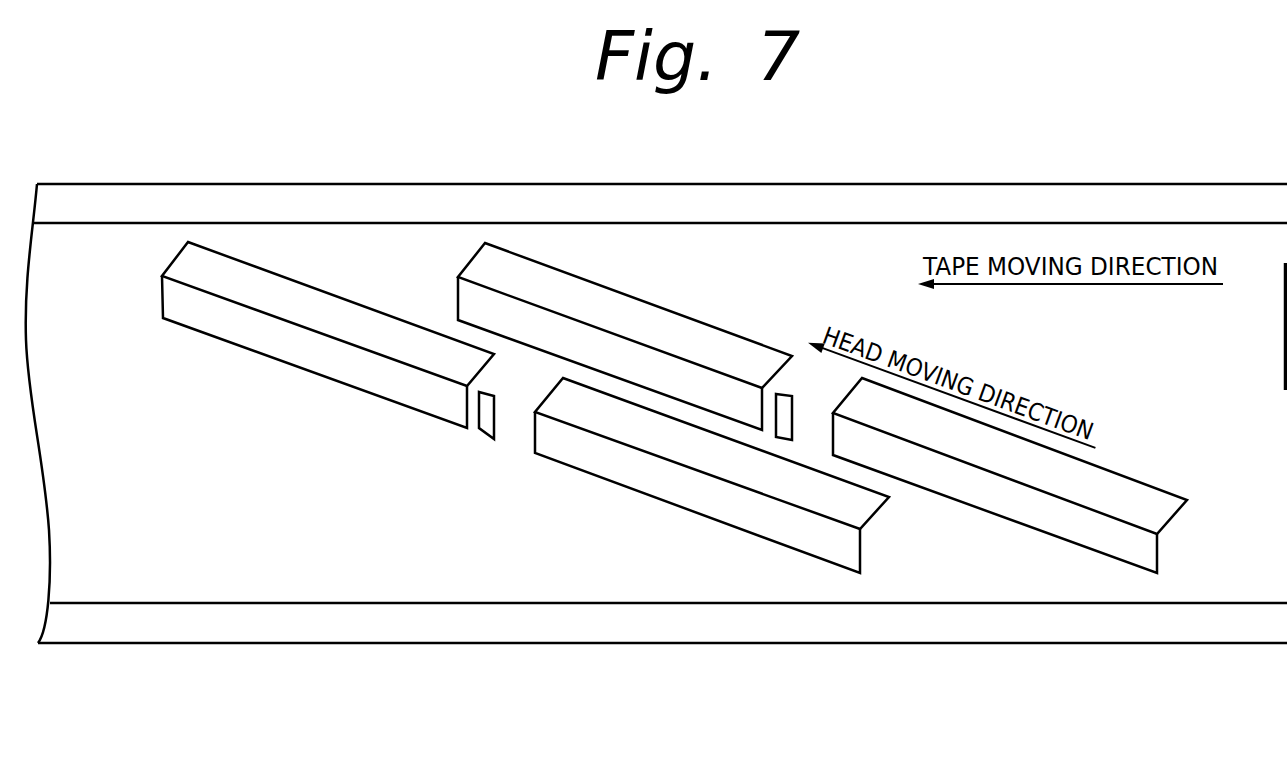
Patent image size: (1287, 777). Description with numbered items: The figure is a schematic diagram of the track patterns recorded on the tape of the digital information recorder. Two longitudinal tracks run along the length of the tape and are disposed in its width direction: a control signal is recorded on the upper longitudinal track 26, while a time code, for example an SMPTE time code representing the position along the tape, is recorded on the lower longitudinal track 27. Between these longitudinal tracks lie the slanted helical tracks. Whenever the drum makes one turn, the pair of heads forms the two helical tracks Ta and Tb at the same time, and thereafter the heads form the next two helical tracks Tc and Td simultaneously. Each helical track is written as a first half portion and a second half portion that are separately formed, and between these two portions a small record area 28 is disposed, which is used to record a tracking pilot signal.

The upper longitudinal track 26 is at (487, 208).
The lower longitudinal track 27 is at (653, 630).
The record area 28 is at (485, 427).
The helical track Ta is at (838, 549).
The helical track Tb is at (860, 512).
The helical track Tc is at (1130, 552).
The helical track Td is at (1168, 508).